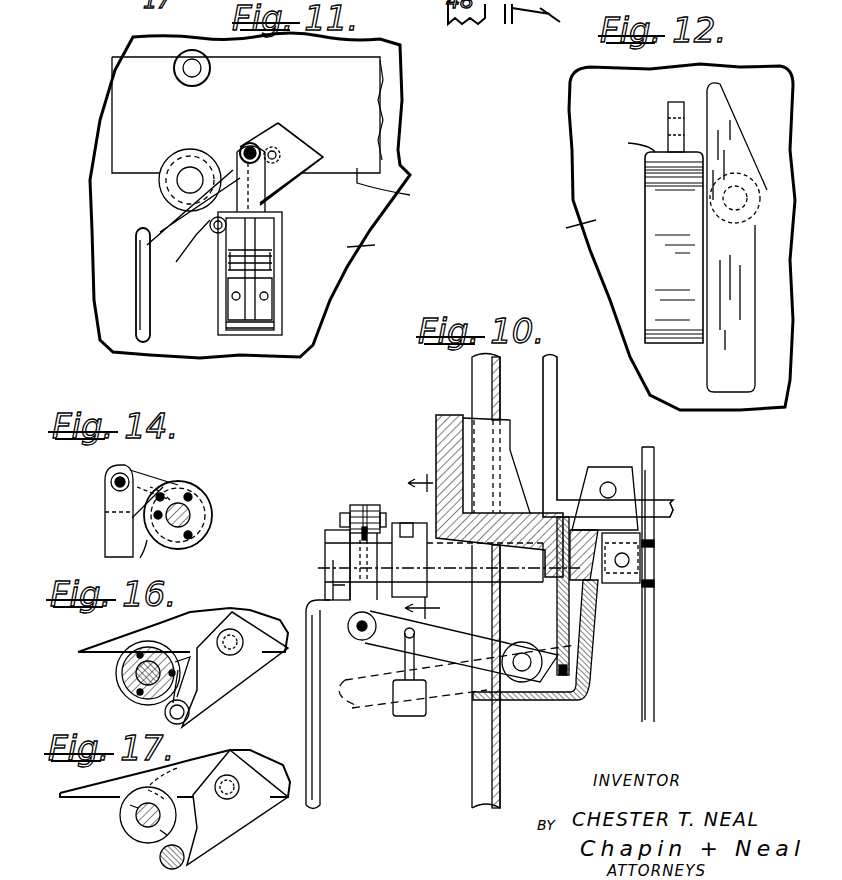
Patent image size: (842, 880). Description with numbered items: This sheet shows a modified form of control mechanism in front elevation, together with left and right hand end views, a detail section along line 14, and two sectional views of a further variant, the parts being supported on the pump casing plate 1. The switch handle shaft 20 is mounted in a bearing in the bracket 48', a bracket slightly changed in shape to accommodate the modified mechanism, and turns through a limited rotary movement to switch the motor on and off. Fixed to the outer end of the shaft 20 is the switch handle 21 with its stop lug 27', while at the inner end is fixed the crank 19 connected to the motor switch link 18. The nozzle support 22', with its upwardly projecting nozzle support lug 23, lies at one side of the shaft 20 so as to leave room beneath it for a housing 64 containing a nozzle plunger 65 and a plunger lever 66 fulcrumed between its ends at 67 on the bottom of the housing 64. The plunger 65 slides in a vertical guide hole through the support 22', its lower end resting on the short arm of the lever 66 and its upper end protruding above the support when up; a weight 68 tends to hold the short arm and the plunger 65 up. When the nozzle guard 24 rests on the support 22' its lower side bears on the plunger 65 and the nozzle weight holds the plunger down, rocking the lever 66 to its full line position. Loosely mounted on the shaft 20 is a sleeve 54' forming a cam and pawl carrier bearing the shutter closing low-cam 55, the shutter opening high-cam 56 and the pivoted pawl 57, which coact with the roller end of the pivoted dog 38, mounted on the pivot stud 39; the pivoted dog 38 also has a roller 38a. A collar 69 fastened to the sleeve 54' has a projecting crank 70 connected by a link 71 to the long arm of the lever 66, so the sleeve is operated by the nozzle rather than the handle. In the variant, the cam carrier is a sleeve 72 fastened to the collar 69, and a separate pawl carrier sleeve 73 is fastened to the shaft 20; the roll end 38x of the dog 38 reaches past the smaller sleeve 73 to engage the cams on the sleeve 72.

In FIG. 11, the side plate 1 is at (368, 248).
In FIG. 12, the side plate 1 is at (574, 227).
In FIG. 10, the side plate 1 is at (500, 372).
In FIG. 10, the reset shaft 14 is at (440, 536).
In FIG. 11, the link 18 is at (140, 296).
In FIG. 10, the link 18 is at (318, 765).
In FIG. 11, the switch handle crank 19 is at (152, 210).
In FIG. 10, the switch handle crank 19 is at (325, 582).
In FIG. 11, the switch handle shaft 20 is at (188, 178).
In FIG. 12, the switch handle shaft 20 is at (745, 192).
In FIG. 10, the switch handle shaft 20 is at (328, 548).
In FIG. 14, the switch handle shaft 20 is at (190, 518).
In FIG. 16, the switch handle shaft 20 is at (128, 678).
In FIG. 17, the switch handle shaft 20 is at (140, 822).
In FIG. 12, the switch handle 21 is at (728, 368).
In FIG. 10, the switch handle 21 is at (655, 663).
In FIG. 12, the nozzle support 22' is at (626, 139).
In FIG. 10, the nozzle support 22' is at (608, 436).
In FIG. 12, the nozzle support lug 23 is at (668, 110).
In FIG. 10, the nozzle support lug 23 is at (602, 470).
In FIG. 10, the nozzle guard 24 is at (558, 492).
In FIG. 12, the stop lug 27' is at (740, 154).
In FIG. 10, the stop lug 27' is at (676, 584).
In FIG. 11, the pivoted dog 38 is at (284, 175).
In FIG. 16, the pivoted dog 38 is at (222, 682).
In FIG. 17, the pivoted dog 38 is at (213, 830).
In FIG. 11, the pin 38a is at (213, 232).
In FIG. 16, the roll end of dog 38x is at (165, 715).
In FIG. 17, the roll end of dog 38x is at (160, 858).
In FIG. 11, the pivot stud 39 is at (278, 147).
In FIG. 16, the pivot stud 39 is at (238, 652).
In FIG. 17, the pivot stud 39 is at (235, 797).
In FIG. 11, the bracket 48' is at (400, 186).
In FIG. 10, the bracket 48' is at (478, 481).
In FIG. 16, the bracket 48' is at (183, 614).
In FIG. 17, the bracket 48' is at (178, 761).
In FIG. 11, the sleeve 54' is at (186, 251).
In FIG. 10, the sleeve 54' is at (410, 544).
In FIG. 14, the sleeve 54' is at (200, 515).
In FIG. 14, the shutter closing low-cam 55 is at (158, 515).
In FIG. 16, the shutter closing low-cam 55 is at (188, 660).
In FIG. 14, the shutter opening high-cam 56 is at (156, 559).
In FIG. 16, the shutter opening high-cam 56 is at (192, 692).
In FIG. 14, the pawl 57 is at (175, 485).
In FIG. 17, the pawl 57 is at (173, 781).
In FIG. 12, the housing 64 is at (655, 221).
In FIG. 10, the housing 64 is at (590, 680).
In FIG. 10, the nozzle plunger 65 is at (557, 598).
In FIG. 11, the plunger lever 66 is at (270, 264).
In FIG. 10, the plunger lever 66 is at (480, 648).
In FIG. 11, the fulcrum 67 is at (270, 292).
In FIG. 10, the fulcrum 67 is at (524, 655).
In FIG. 10, the weight 68 is at (399, 718).
In FIG. 10, the collar 69 is at (380, 522).
In FIG. 11, the crank 70 is at (240, 160).
In FIG. 10, the crank 70 is at (360, 505).
In FIG. 14, the crank 70 is at (142, 484).
In FIG. 11, the link 71 is at (257, 202).
In FIG. 10, the link 71 is at (453, 646).
In FIG. 14, the link 71 is at (118, 523).
In FIG. 16, the sleeve 72 is at (152, 648).
In FIG. 17, the sleeve 73 is at (128, 813).